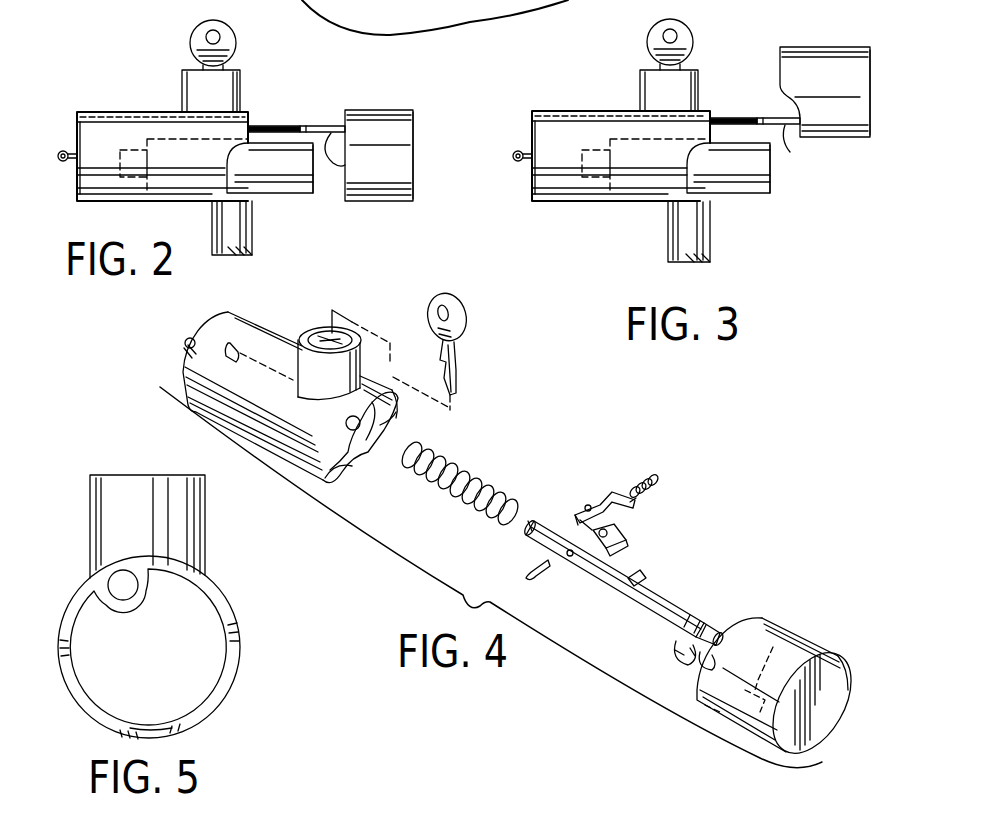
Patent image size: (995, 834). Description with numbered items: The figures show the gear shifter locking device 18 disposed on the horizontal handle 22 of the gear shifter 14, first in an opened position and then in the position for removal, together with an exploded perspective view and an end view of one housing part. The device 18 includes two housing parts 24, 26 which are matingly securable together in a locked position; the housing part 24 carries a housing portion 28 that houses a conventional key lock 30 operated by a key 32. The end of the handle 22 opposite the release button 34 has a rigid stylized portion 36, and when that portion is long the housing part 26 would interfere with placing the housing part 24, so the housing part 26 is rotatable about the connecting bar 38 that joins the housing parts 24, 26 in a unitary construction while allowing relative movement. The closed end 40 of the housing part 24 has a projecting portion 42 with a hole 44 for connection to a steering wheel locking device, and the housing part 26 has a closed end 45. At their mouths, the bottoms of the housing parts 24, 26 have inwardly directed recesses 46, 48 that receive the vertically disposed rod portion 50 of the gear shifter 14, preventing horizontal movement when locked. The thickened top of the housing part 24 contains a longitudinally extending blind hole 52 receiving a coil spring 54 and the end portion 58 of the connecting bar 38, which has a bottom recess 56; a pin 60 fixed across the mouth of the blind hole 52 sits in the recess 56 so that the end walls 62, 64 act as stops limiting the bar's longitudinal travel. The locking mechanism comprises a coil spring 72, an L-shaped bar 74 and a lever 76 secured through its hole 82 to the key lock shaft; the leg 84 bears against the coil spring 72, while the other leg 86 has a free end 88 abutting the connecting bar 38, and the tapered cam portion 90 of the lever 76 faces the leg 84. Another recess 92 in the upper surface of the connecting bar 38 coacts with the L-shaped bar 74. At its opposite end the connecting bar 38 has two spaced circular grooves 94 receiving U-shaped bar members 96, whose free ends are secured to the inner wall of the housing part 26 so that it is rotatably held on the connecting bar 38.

In FIG. 2, the gear shifter 14 is at (255, 216).
In FIG. 3, the gear shifter 14 is at (720, 200).
In FIG. 2, the gear shifter locking device 18 is at (168, 84).
In FIG. 3, the gear shifter locking device 18 is at (638, 96).
In FIG. 4, the gear shifter locking device 18 is at (613, 432).
In FIG. 2, the horizontal handle 22 is at (280, 185).
In FIG. 3, the horizontal handle 22 is at (768, 180).
In FIG. 2, the housing part 24 is at (138, 117).
In FIG. 3, the housing part 24 is at (583, 120).
In FIG. 4, the housing part 24 is at (258, 328).
In FIG. 5, the housing part 24 is at (235, 598).
In FIG. 2, the housing part 26 is at (383, 112).
In FIG. 3, the housing part 26 is at (800, 48).
In FIG. 4, the housing part 26 is at (803, 640).
In FIG. 2, the housing portion 28 is at (241, 80).
In FIG. 3, the housing portion 28 is at (699, 75).
In FIG. 4, the housing portion 28 is at (372, 362).
In FIG. 5, the housing portion 28 is at (195, 528).
In FIG. 4, the key lock 30 is at (355, 330).
In FIG. 2, the key 32 is at (232, 44).
In FIG. 3, the key 32 is at (690, 40).
In FIG. 4, the key 32 is at (469, 325).
In FIG. 2, the release button 34 is at (118, 180).
In FIG. 3, the release button 34 is at (578, 205).
In FIG. 2, the rigid stylized portion 36 is at (308, 170).
In FIG. 3, the rigid stylized portion 36 is at (762, 160).
In FIG. 2, the connecting bar 38 is at (330, 114).
In FIG. 3, the connecting bar 38 is at (725, 112).
In FIG. 4, the connecting bar 38 is at (665, 588).
In FIG. 2, the closed end 40 is at (77, 113).
In FIG. 3, the closed end 40 is at (532, 114).
In FIG. 5, the closed end 40 is at (166, 674).
In FIG. 2, the projecting portion 42 is at (70, 163).
In FIG. 3, the projecting portion 42 is at (528, 148).
In FIG. 4, the projecting portion 42 is at (188, 338).
In FIG. 2, the hole 44 is at (60, 152).
In FIG. 3, the hole 44 is at (516, 165).
In FIG. 4, the hole 44 is at (183, 356).
In FIG. 2, the closed end 45 is at (412, 138).
In FIG. 3, the closed end 45 is at (870, 55).
In FIG. 4, the closed end 45 is at (822, 681).
In FIG. 4, the recess 46 is at (338, 467).
In FIG. 5, the recess 46 is at (178, 727).
In FIG. 4, the recess 48 is at (705, 705).
In FIG. 2, the rod portion 50 is at (250, 237).
In FIG. 3, the rod portion 50 is at (712, 242).
In FIG. 4, the blind hole 52 is at (365, 426).
In FIG. 5, the blind hole 52 is at (122, 583).
In FIG. 4, the coil spring 54 is at (456, 470).
In FIG. 2, the recess 56 is at (335, 135).
In FIG. 3, the recess 56 is at (785, 134).
In FIG. 4, the recess 56 is at (590, 572).
In FIG. 4, the end portion 58 is at (525, 532).
In FIG. 4, the pin 60 is at (525, 577).
In FIG. 4, the end wall 62 is at (568, 565).
In FIG. 4, the end wall 64 is at (660, 612).
In FIG. 4, the coil spring 72 is at (650, 480).
In FIG. 4, the L-shaped bar 74 is at (612, 493).
In FIG. 4, the lever 76 is at (628, 532).
In FIG. 4, the hole 82 is at (580, 520).
In FIG. 4, the leg 84 is at (632, 510).
In FIG. 4, the leg 86 is at (592, 500).
In FIG. 4, the free end 88 is at (580, 510).
In FIG. 4, the cam portion 90 is at (640, 540).
In FIG. 2, the recess 92 is at (303, 124).
In FIG. 3, the recess 92 is at (762, 117).
In FIG. 4, the recess 92 is at (655, 575).
In FIG. 4, the circular grooves 94 is at (700, 626).
In FIG. 4, the U-shaped bar members 96 is at (672, 655).